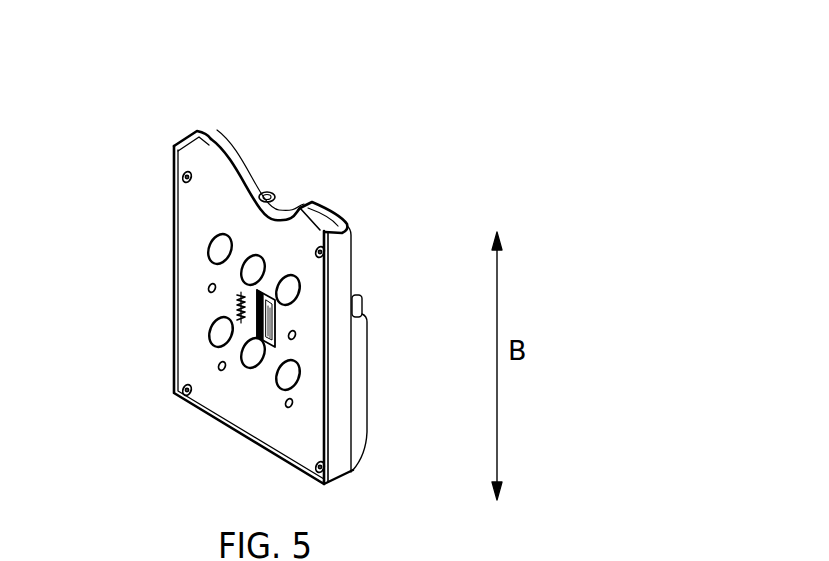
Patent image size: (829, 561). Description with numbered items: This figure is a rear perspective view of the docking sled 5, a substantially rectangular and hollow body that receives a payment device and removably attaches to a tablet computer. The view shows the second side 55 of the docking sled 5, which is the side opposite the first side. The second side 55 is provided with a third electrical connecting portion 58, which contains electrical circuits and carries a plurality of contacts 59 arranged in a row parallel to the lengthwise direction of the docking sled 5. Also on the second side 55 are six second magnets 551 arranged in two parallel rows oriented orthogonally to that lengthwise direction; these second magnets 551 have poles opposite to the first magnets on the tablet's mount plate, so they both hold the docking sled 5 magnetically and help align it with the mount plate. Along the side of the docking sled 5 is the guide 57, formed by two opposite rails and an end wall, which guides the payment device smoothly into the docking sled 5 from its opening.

The docking sled 5 is at (257, 271).
The second side 55 is at (200, 209).
The second magnets 551 is at (287, 376).
The guide 57 is at (362, 430).
The third electrical connecting portion 58 is at (239, 311).
The contacts 59 is at (257, 319).